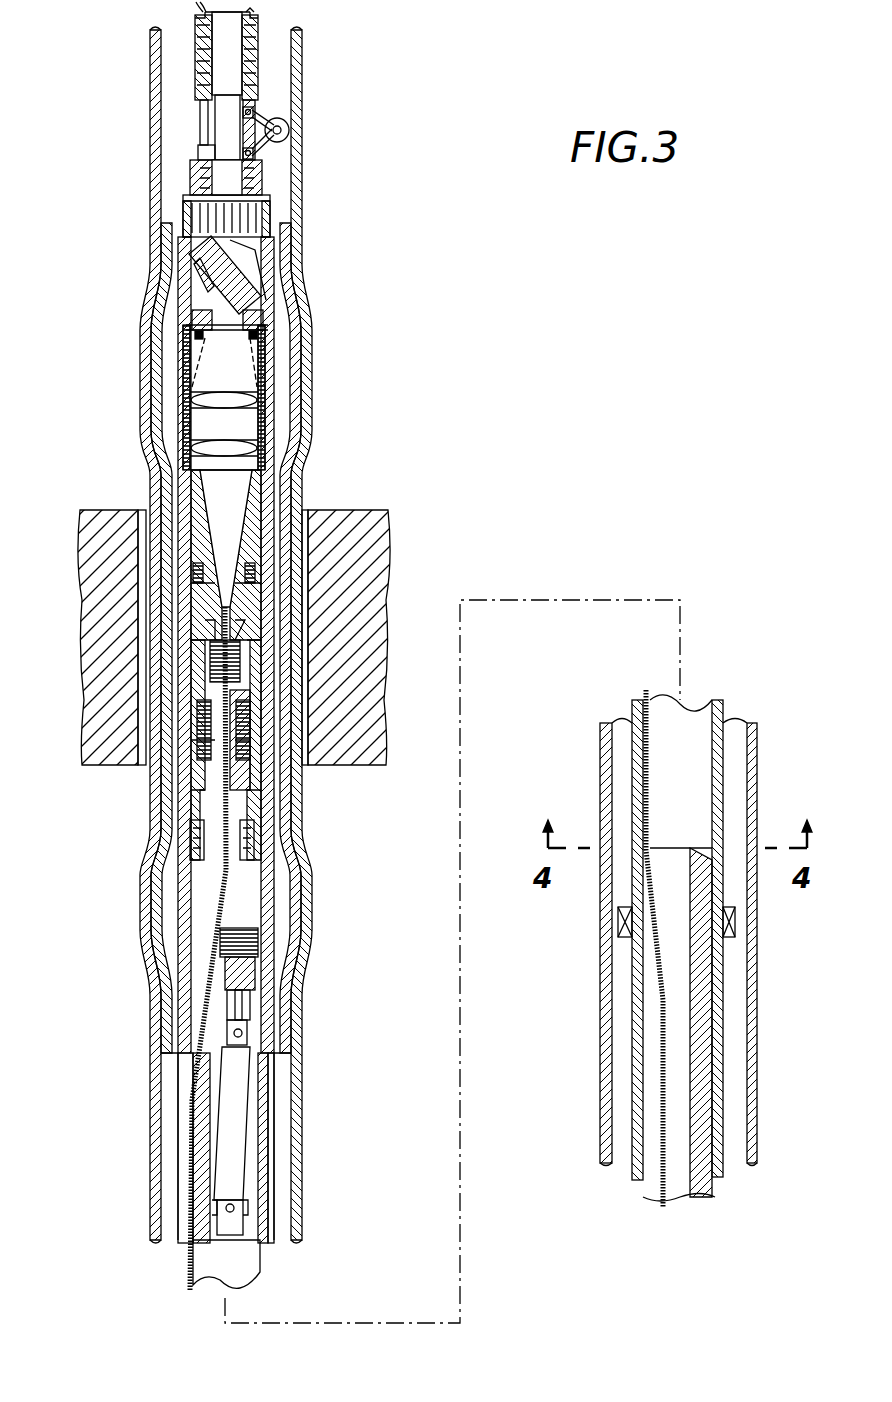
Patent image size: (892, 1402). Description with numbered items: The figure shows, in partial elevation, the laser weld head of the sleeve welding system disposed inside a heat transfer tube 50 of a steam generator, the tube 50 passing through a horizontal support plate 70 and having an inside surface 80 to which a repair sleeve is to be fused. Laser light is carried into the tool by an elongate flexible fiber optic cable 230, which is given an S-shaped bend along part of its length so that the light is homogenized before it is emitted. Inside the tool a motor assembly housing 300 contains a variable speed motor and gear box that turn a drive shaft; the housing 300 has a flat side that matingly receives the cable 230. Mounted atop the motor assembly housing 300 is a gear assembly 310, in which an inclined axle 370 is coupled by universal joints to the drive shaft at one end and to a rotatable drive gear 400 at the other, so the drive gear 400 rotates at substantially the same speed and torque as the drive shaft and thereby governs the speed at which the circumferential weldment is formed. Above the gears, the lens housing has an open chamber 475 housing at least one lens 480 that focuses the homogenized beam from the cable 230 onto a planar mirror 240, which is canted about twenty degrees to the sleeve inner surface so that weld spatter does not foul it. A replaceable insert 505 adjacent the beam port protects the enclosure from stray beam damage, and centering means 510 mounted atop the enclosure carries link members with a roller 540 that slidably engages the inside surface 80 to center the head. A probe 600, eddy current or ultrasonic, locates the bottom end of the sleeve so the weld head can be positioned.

The heat transfer tube 50 is at (297, 833).
The support plate 70 is at (107, 516).
The inside surface 80 is at (284, 796).
The fiber optic cable 230 is at (190, 1205).
The planar mirror 240 is at (193, 283).
The motor assembly housing 300 is at (700, 722).
The gear assembly 310 is at (188, 962).
The axle 370 is at (238, 1120).
The drive gear 400 is at (258, 949).
The open chamber 475 is at (240, 488).
The lens 480 is at (257, 448).
The replaceable insert 505 is at (250, 270).
The centering means 510 is at (186, 82).
The roller 540 is at (292, 122).
The probe 600 is at (736, 915).